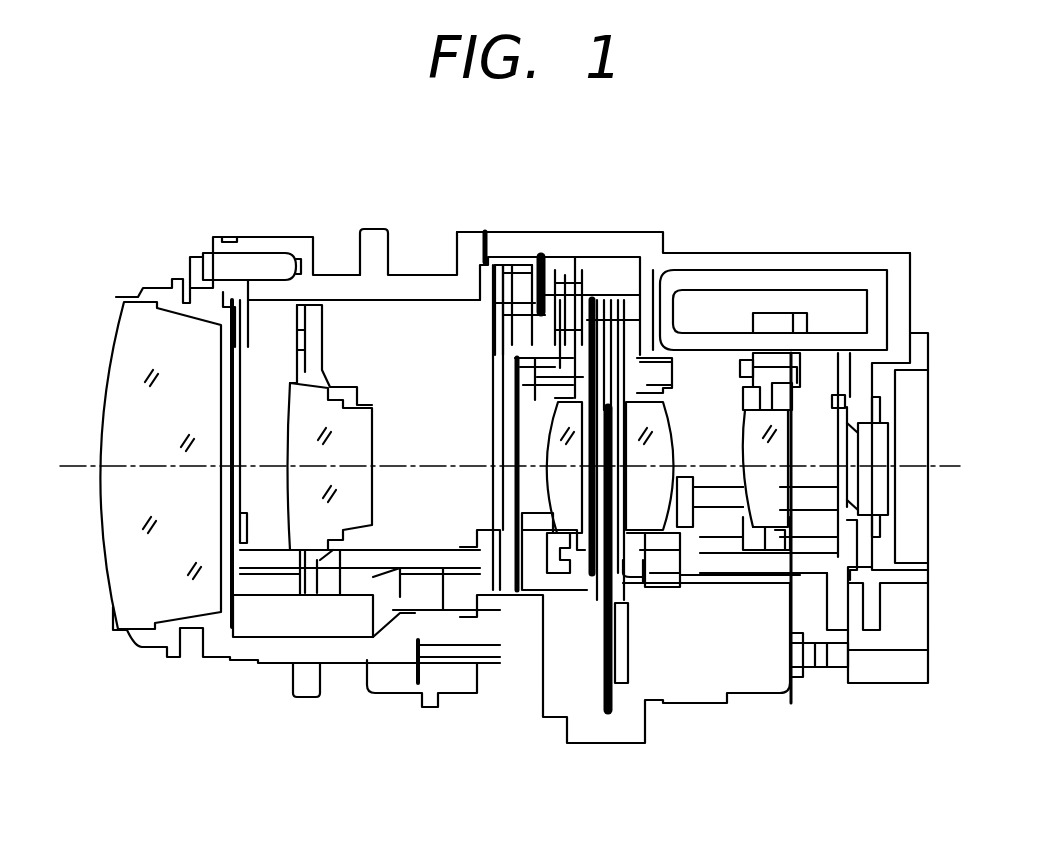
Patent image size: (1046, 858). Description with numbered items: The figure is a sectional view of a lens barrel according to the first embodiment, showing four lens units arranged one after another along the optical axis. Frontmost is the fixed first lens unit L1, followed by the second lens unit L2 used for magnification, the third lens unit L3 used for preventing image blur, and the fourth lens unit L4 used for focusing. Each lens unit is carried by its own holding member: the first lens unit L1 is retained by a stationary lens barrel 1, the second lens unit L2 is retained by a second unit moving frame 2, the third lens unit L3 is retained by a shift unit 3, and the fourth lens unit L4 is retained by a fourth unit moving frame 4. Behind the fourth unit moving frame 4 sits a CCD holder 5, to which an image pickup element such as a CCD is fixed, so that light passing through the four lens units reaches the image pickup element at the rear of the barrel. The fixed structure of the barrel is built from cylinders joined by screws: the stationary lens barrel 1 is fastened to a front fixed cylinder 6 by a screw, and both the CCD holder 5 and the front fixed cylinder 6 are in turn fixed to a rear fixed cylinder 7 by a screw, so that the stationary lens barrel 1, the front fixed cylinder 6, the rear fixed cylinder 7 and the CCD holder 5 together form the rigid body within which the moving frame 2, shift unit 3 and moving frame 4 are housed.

The stationary lens barrel 1 is at (150, 297).
The second unit moving frame 2 is at (315, 338).
The shift unit 3 is at (515, 367).
The fourth unit moving frame 4 is at (762, 393).
The CCD holder 5 is at (883, 262).
The front fixed cylinder 6 is at (375, 237).
The rear fixed cylinder 7 is at (573, 238).
The first lens unit L1 is at (117, 410).
The second lens unit L2 is at (347, 492).
The third lens unit L3 is at (680, 426).
The fourth lens unit L4 is at (763, 437).